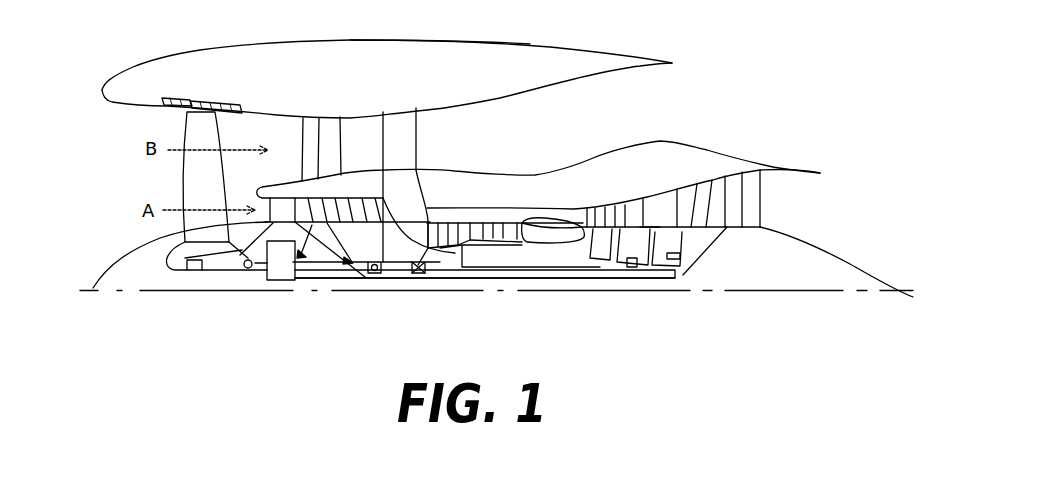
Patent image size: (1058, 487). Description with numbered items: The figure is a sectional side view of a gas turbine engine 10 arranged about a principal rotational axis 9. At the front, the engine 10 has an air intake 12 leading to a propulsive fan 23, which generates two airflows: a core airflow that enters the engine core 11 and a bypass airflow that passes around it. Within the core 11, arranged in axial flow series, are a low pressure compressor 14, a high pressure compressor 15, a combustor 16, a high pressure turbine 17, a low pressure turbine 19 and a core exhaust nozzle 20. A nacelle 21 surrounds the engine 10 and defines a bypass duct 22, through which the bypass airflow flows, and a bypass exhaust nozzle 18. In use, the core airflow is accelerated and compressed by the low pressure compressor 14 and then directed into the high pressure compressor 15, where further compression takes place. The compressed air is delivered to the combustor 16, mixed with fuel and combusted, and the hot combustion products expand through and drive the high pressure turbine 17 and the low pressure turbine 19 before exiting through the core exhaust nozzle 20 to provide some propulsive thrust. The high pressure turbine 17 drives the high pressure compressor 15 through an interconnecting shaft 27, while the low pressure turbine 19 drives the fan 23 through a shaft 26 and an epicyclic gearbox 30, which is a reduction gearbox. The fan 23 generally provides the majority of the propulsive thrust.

The principal rotational axis 9 is at (727, 291).
The gas turbine engine 10 is at (170, 57).
The core 11 is at (537, 183).
The air intake 12 is at (112, 142).
The low pressure compressor 14 is at (342, 155).
The high pressure compressor 15 is at (478, 230).
The combustor 16 is at (550, 236).
The high pressure turbine 17 is at (607, 210).
The bypass exhaust nozzle 18 is at (722, 99).
The low pressure turbine 19 is at (733, 190).
The core exhaust nozzle 20 is at (800, 208).
The nacelle 21 is at (408, 58).
The bypass duct 22 is at (648, 111).
The propulsive fan 23 is at (185, 180).
The shaft 26 is at (473, 282).
The interconnecting shaft 27 is at (513, 267).
The epicyclic gearbox 30 is at (281, 279).